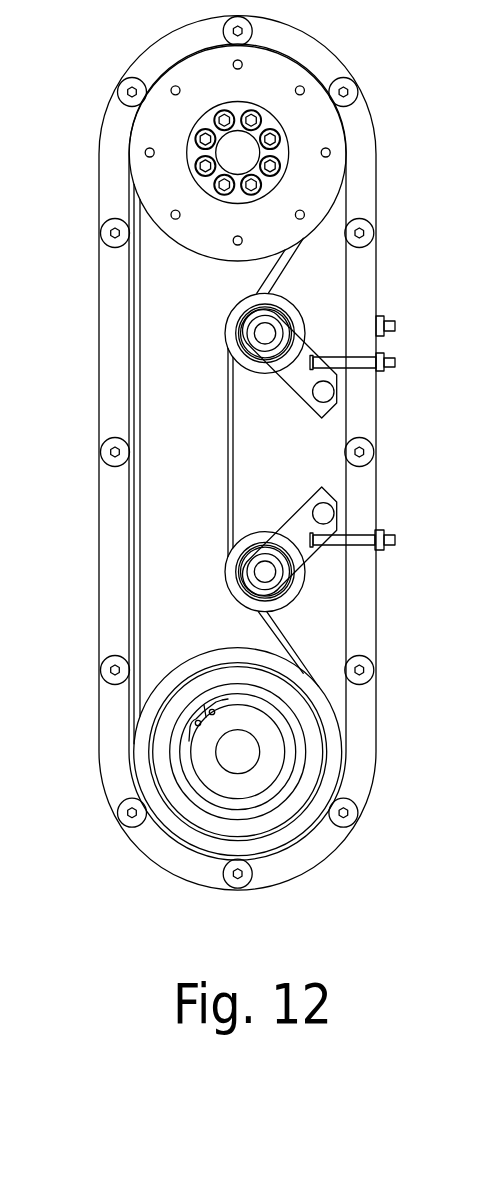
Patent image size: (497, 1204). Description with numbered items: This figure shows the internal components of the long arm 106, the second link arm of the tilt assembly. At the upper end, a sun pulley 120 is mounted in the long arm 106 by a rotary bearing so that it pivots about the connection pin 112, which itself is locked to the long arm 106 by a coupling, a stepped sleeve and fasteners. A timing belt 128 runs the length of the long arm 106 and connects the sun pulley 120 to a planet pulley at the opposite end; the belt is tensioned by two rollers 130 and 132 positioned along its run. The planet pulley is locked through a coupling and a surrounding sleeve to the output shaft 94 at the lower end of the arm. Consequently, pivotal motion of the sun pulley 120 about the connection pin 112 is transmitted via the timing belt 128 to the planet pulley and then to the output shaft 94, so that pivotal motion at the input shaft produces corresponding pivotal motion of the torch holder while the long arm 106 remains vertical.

The connection pin 112 is at (242, 143).
The sun pulley 120 is at (176, 244).
The roller 130 is at (226, 327).
The timing belt 128 is at (227, 460).
The roller 132 is at (226, 577).
The output shaft 94 is at (233, 755).
The long arm 106 is at (147, 852).